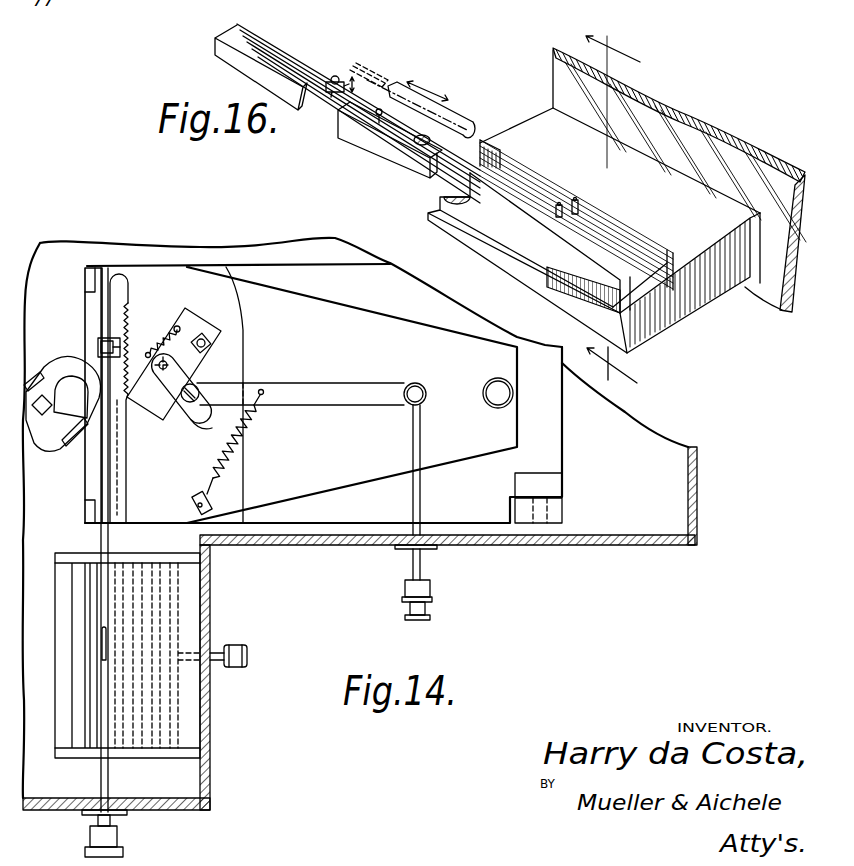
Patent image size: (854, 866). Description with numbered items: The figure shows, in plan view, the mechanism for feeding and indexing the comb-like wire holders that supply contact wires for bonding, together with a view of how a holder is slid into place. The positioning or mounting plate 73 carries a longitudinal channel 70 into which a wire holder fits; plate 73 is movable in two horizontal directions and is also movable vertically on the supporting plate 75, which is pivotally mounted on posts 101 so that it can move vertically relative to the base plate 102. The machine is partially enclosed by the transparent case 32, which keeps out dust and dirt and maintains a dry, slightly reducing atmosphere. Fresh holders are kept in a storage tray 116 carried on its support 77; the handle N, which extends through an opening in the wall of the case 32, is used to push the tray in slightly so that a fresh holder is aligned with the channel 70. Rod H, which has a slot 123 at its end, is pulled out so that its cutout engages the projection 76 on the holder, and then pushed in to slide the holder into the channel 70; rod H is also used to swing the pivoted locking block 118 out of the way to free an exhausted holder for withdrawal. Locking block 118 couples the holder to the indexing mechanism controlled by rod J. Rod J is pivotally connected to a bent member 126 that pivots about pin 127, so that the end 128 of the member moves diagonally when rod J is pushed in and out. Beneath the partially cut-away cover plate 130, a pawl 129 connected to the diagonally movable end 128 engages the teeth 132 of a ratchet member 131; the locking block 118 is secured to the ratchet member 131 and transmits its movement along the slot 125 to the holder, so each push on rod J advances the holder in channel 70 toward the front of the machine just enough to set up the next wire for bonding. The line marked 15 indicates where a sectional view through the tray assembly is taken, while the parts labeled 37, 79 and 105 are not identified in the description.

In FIG. 16, the section line 15- 15 is at (628, 213).
In FIG. 16, the transparent case 32 is at (722, 127).
In FIG. 14, the transparent case 32 is at (557, 547).
In FIG. 14, the stop member 37 is at (67, 452).
In FIG. 14, the channel 70 is at (105, 268).
In FIG. 14, the positioning plate 73 is at (400, 330).
In FIG. 14, the supporting plate 75 is at (548, 453).
In FIG. 16, the projection 76 is at (376, 118).
In FIG. 16, the storage tray support 77 is at (700, 302).
In FIG. 14, the storage tray support 77 is at (60, 670).
In FIG. 16, the shaft 79 is at (386, 100).
In FIG. 14, the shaft 79 is at (102, 653).
In FIG. 14, the posts 101 is at (540, 497).
In FIG. 14, the base plate 102 is at (652, 547).
In FIG. 14, the bushing 105 is at (496, 398).
In FIG. 14, the storage tray 116 is at (95, 738).
In FIG. 16, the locking block 118 is at (338, 80).
In FIG. 14, the locking block 118 is at (100, 345).
In FIG. 16, the slot 123 is at (342, 107).
In FIG. 14, the slot 125 is at (120, 478).
In FIG. 14, the bent member 126 is at (340, 386).
In FIG. 14, the pin 127 is at (213, 405).
In FIG. 14, the end of bent member 128 is at (180, 362).
In FIG. 14, the pawl 129 is at (157, 382).
In FIG. 14, the cover plate 130 is at (182, 437).
In FIG. 14, the ratchet member 131 is at (118, 298).
In FIG. 14, the teeth 132 is at (129, 322).
In FIG. 16, the rod H is at (479, 113).
In FIG. 14, the rod H is at (128, 843).
In FIG. 14, the rod J is at (439, 603).
In FIG. 14, the handle N is at (254, 642).